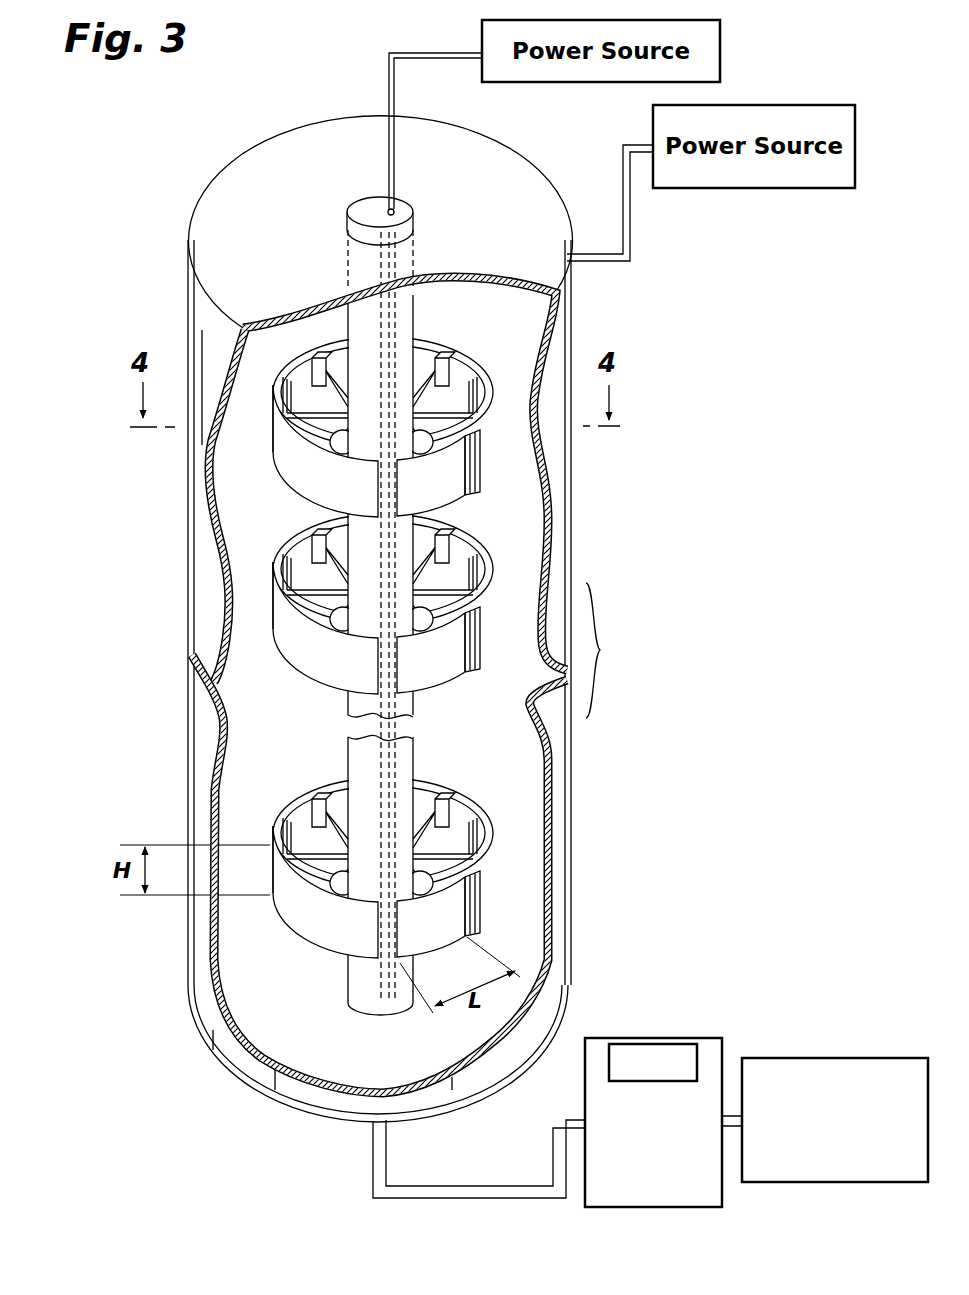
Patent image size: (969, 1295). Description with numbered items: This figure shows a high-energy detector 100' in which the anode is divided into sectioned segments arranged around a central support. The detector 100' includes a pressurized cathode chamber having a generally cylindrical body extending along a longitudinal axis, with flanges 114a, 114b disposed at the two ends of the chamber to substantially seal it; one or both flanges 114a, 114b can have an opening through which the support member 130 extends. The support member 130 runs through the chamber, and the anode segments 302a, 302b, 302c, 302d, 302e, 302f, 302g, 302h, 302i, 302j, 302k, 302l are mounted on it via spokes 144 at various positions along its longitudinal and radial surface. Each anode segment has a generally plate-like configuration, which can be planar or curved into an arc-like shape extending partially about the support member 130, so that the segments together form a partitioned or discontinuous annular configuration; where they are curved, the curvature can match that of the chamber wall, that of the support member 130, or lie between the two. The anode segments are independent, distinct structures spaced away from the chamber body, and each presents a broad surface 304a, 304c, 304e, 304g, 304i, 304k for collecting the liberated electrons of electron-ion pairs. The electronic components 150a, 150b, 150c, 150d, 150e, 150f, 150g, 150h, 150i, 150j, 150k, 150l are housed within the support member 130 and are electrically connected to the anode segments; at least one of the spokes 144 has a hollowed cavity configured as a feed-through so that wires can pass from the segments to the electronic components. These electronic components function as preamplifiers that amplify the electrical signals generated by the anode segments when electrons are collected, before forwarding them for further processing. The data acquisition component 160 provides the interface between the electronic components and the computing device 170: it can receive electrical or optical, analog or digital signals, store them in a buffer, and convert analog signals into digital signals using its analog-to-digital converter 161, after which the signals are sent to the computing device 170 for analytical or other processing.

The high-energy detector 100' is at (319, 566).
The flange 114a is at (272, 155).
The flange 114b is at (232, 1075).
The support member 130 is at (418, 248).
The spokes 144 is at (337, 340).
The electronic component 150a is at (433, 468).
The electronic component 150b is at (427, 387).
The electronic component 150c is at (326, 476).
The electronic component 150d is at (375, 385).
The electronic component 150e is at (430, 607).
The electronic component 150f is at (430, 572).
The electronic component 150g is at (327, 610).
The electronic component 150h is at (363, 518).
The electronic component 150i is at (440, 908).
The electronic component 150j is at (417, 770).
The electronic component 150k is at (325, 907).
The electronic component 150l is at (357, 763).
The anode segment 302a is at (467, 504).
The anode segment 302b is at (493, 382).
The anode segment 302c is at (276, 491).
The anode segment 302d is at (283, 350).
The anode segment 302e is at (444, 691).
The anode segment 302f is at (491, 605).
The anode segment 302g is at (326, 698).
The anode segment 302h is at (291, 527).
The anode segment 302i is at (480, 929).
The anode segment 302j is at (494, 839).
The anode segment 302k is at (336, 964).
The anode segment 302l is at (306, 784).
The broad surface 304a is at (470, 468).
The broad surface 304c is at (272, 448).
The broad surface 304e is at (463, 648).
The broad surface 304g is at (280, 647).
The broad surface 304i is at (480, 885).
The broad surface 304k is at (290, 910).
The data acquisition component 160 is at (707, 1038).
The analog-to-digital converter 161 is at (622, 1043).
The computing device 170 is at (825, 1058).